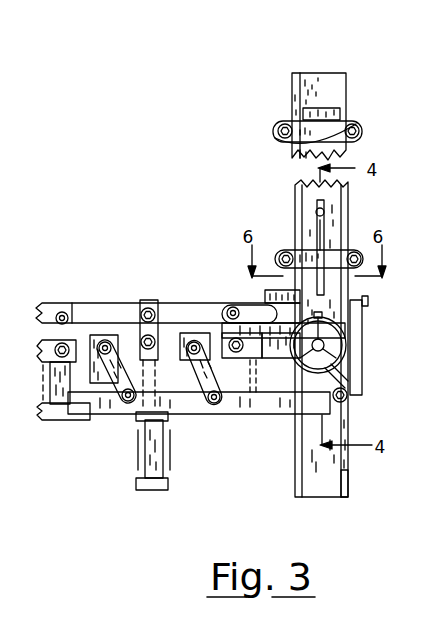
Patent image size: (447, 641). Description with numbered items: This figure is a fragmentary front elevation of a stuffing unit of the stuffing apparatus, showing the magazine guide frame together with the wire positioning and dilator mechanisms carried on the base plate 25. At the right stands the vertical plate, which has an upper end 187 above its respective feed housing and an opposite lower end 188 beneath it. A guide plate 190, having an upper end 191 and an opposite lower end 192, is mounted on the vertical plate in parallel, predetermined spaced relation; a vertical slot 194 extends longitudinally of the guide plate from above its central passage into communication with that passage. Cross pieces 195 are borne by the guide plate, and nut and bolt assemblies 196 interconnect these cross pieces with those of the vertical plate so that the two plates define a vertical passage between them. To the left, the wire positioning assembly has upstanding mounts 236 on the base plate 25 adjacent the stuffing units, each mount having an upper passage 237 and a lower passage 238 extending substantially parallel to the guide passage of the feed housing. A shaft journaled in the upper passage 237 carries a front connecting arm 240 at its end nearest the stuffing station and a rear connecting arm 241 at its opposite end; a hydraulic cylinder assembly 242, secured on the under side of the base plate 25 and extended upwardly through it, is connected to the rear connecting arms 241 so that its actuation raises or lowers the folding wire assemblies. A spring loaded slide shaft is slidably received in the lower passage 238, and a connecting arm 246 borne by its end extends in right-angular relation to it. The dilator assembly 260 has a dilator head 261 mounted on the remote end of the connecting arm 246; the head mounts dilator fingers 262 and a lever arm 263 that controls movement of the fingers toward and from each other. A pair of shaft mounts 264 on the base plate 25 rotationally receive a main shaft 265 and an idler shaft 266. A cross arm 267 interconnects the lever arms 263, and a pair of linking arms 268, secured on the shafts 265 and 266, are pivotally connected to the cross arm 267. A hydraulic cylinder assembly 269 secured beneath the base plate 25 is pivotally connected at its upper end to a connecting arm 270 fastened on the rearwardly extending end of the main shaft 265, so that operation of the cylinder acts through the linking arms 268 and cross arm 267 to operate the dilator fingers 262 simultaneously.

The upper end 187 is at (320, 73).
The lower end 188 is at (352, 492).
The guide plate 190 is at (302, 158).
The upper end 191 is at (341, 112).
The lower end 192 is at (301, 493).
The vertical slot 194 is at (323, 210).
The cross pieces 195 is at (341, 124).
The nut and bolt assemblies 196 is at (357, 128).
The upstanding mounts 236 is at (203, 303).
The upper passage 237 is at (58, 318).
The lower passage 238 is at (53, 412).
The front connecting arm 240 is at (50, 318).
The rear connecting arm 241 is at (92, 322).
The hydraulic cylinder assembly 242 is at (138, 300).
The connecting arm 246 is at (272, 398).
The dilator assembly 260 is at (314, 420).
The dilator head 261 is at (346, 350).
The dilator fingers 262 is at (343, 340).
The lever arm 263 is at (346, 396).
The shaft mounts 264 is at (88, 325).
The main shaft 265 is at (88, 416).
The idler shaft 266 is at (178, 416).
The cross arm 267 is at (150, 449).
The linking arms 268 is at (91, 405).
The hydraulic cylinder assembly 269 is at (174, 470).
The connecting arm 270 is at (124, 320).
The base plate 25 is at (167, 405).